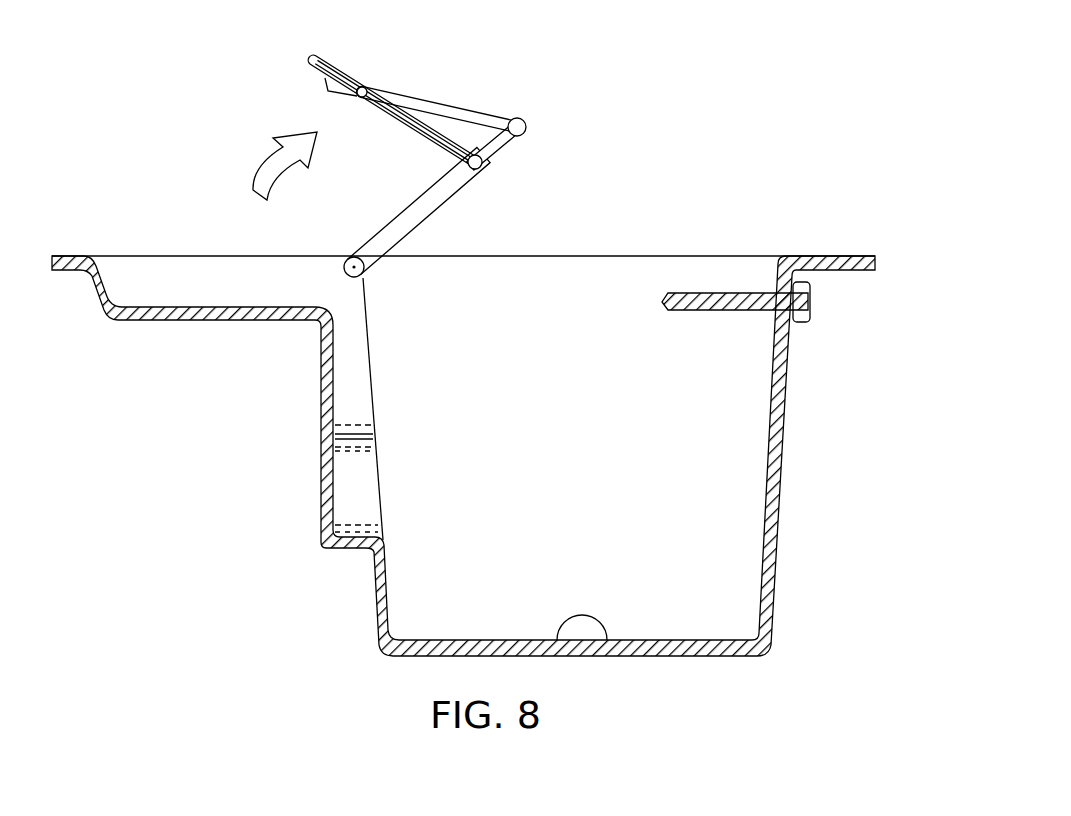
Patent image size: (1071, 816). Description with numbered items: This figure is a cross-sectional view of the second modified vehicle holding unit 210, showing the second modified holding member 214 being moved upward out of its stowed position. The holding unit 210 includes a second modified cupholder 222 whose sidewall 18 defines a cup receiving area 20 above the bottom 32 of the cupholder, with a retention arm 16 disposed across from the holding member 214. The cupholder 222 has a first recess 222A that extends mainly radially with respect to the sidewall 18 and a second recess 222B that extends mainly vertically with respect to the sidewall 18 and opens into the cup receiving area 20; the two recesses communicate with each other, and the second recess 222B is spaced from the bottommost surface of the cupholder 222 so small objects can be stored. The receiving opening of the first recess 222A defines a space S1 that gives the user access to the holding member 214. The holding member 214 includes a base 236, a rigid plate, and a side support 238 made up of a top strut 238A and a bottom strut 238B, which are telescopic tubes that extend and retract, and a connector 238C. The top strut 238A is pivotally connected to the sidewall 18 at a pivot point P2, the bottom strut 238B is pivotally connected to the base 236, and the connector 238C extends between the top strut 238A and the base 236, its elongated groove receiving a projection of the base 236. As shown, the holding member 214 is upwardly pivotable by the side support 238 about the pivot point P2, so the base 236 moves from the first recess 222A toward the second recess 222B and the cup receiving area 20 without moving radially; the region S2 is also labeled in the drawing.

The retention arm 16 is at (748, 292).
The sidewall 18 is at (374, 403).
The cup receiving area 20 is at (605, 322).
The bottom 32 is at (607, 640).
The vehicle holding unit 210 is at (734, 133).
The holding member 214 is at (452, 81).
The cupholder 222 is at (684, 204).
The first recess 222A is at (163, 297).
The second recess 222B is at (349, 489).
The base 236 is at (410, 96).
The side support 238 is at (512, 192).
The top strut 238A is at (440, 212).
The bottom strut 238B is at (504, 149).
The connector 238C is at (318, 72).
The space S1 is at (115, 233).
The interior space S2 is at (649, 589).
The pivot point P2 is at (348, 278).